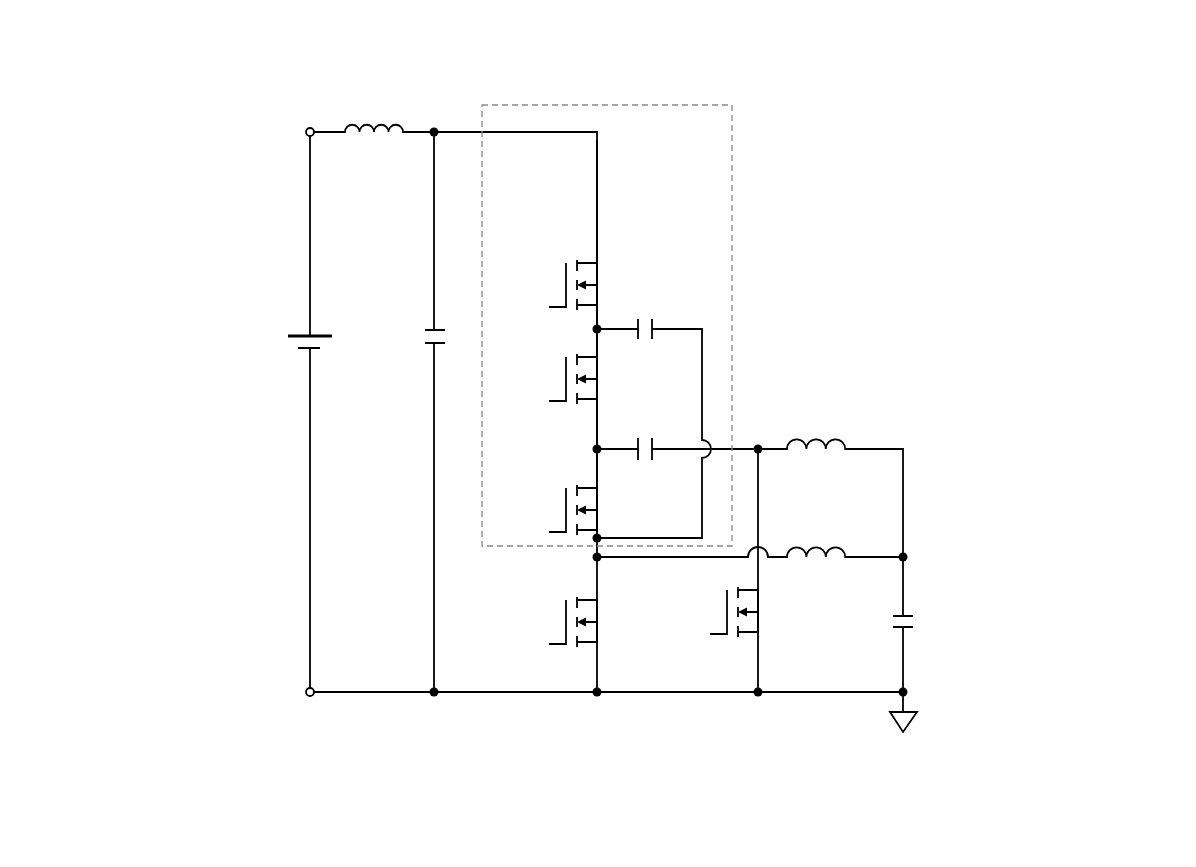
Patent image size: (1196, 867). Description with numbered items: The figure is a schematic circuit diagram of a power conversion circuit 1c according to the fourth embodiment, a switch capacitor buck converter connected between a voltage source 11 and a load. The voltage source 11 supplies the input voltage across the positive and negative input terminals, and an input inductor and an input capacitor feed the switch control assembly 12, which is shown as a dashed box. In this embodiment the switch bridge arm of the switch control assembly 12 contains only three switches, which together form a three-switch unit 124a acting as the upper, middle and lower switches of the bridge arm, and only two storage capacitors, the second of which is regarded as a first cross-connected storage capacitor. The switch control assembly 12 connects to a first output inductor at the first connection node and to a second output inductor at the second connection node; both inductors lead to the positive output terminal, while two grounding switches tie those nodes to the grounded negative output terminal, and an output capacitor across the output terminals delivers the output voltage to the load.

The power conversion circuit 1c is at (1165, 103).
The voltage source 11 is at (311, 332).
The switch control assembly 12 is at (694, 104).
The three-switch unit 124a is at (626, 238).